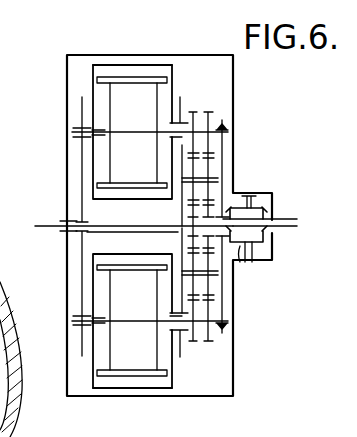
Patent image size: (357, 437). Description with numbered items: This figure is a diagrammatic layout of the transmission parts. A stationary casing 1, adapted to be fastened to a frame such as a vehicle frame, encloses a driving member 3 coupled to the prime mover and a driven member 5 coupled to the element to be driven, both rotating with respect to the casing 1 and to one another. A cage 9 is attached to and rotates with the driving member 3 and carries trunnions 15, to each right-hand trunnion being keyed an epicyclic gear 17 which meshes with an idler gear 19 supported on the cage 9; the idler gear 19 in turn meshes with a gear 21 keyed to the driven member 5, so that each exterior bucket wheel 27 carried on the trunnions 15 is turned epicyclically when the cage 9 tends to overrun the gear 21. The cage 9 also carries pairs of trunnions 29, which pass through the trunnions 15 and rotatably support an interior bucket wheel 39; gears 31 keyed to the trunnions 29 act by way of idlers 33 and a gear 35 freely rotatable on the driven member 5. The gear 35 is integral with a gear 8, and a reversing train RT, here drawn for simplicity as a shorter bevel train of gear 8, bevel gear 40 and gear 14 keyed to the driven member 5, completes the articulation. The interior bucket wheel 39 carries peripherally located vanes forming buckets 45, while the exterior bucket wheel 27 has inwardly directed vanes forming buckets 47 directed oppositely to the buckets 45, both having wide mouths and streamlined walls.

The stationary casing 1 is at (66, 80).
The driving member 3 is at (48, 224).
The driven member 5 is at (296, 227).
The gear 8 is at (232, 233).
The cage 9 is at (181, 100).
The gear 14 is at (266, 214).
The trunnions 15 is at (178, 137).
The epicyclic gear 17 is at (205, 111).
The idler gear 19 is at (195, 167).
The gear 21 is at (182, 207).
The bucket wheel 27 is at (168, 64).
The trunnions 29 is at (227, 128).
The gear 31 is at (219, 118).
The idler 33 is at (208, 178).
The gear 35 is at (224, 214).
The interior bucket wheel 39 is at (148, 81).
The bevel gear 40 is at (257, 204).
The buckets 45 is at (132, 73).
The buckets 47 is at (100, 62).
The reversing train RT is at (253, 249).